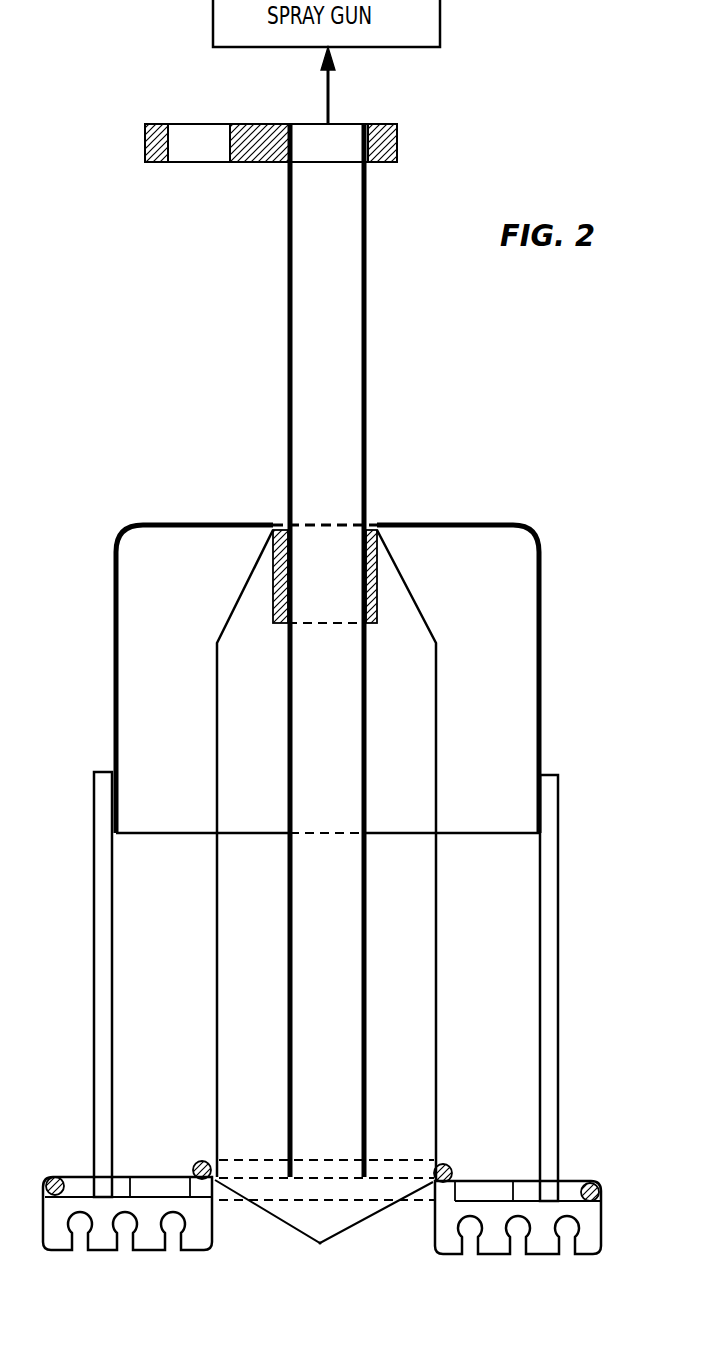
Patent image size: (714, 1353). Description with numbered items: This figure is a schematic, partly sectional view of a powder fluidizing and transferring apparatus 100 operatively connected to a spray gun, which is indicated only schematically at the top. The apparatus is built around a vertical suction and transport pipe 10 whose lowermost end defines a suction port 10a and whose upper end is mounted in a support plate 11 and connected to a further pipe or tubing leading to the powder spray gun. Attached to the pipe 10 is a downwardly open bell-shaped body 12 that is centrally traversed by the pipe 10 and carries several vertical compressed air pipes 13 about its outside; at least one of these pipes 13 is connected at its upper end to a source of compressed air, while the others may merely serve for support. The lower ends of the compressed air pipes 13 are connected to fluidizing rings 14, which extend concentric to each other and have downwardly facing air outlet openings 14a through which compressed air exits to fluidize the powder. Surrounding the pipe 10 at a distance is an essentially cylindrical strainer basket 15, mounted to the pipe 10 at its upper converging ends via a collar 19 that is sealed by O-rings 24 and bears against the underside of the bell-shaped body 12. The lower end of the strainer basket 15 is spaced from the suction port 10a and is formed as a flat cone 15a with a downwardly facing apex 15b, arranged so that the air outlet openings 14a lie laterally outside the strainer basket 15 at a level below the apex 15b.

The powder fluidizing and transferring apparatus 100 is at (562, 544).
The vertical suction and transport pipe 10 is at (348, 344).
The suction port 10a is at (330, 1185).
The support plate 11 is at (245, 160).
The bell-shaped body 12 is at (542, 695).
The compressed air pipes 13 is at (103, 972).
The fluidizing rings 14 is at (592, 1224).
The air outlet openings 14a is at (125, 1250).
The strainer basket 15 is at (410, 995).
The flat cone 15a is at (293, 1231).
The apex 15b is at (320, 1245).
The collar 19 is at (372, 577).
The O-rings 24 is at (273, 545).